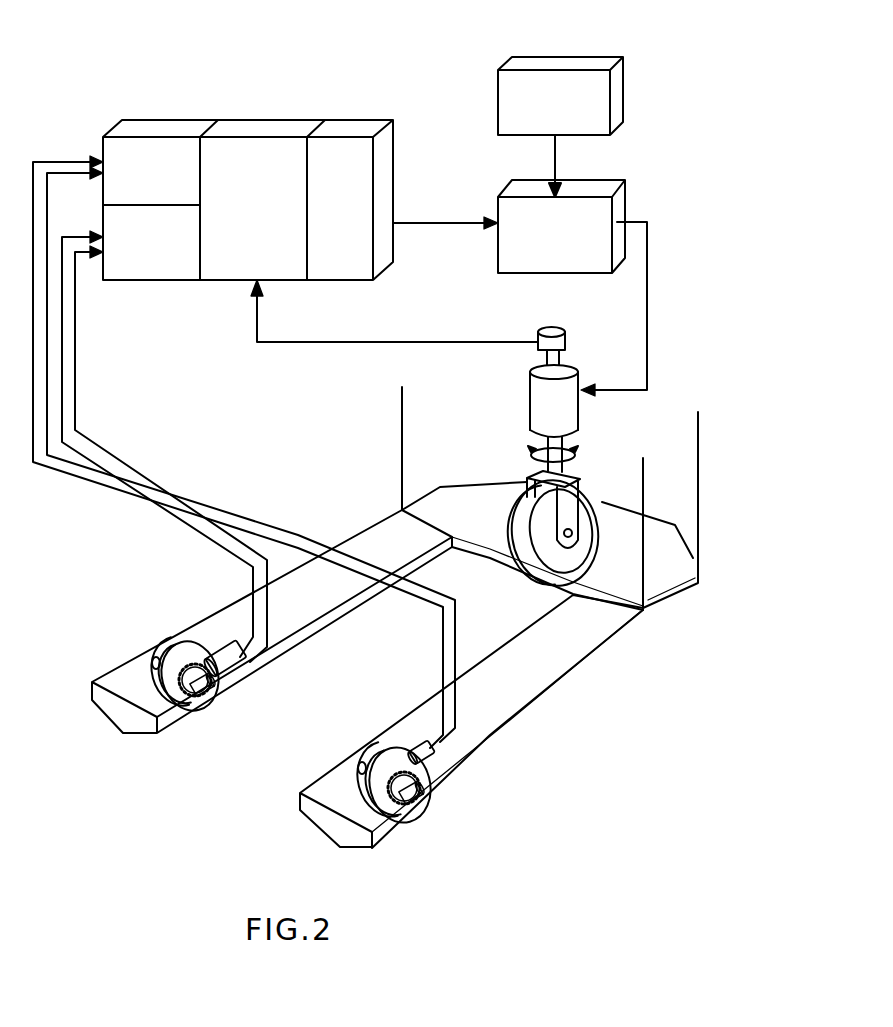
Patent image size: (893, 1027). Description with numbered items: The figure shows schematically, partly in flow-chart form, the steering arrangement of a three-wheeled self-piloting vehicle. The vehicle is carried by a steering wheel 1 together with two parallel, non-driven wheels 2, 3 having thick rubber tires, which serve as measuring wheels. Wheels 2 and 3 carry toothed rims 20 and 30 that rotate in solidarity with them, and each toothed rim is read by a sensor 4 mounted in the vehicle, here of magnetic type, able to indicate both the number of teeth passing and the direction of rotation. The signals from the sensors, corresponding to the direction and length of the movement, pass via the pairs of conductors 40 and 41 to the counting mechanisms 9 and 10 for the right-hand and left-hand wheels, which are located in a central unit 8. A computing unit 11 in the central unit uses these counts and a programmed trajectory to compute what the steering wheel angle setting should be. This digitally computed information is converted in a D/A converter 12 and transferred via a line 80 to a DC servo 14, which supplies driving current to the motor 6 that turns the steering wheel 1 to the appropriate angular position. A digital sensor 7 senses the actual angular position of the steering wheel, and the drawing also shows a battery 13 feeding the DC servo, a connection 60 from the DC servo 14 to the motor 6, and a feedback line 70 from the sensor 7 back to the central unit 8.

The steering wheel 1 is at (594, 510).
The non-driven wheel 2 is at (168, 648).
The non-driven wheel 3 is at (374, 752).
The sensor 4 is at (222, 650).
The motor 6 is at (530, 398).
The digital sensor 7 is at (567, 340).
The central unit 8 is at (248, 187).
The counting mechanism 9 is at (160, 135).
The counting mechanism 10 is at (148, 282).
The computing unit 11 is at (234, 137).
The D/A converter 12 is at (345, 133).
The battery 13 is at (564, 56).
The DC servo 14 is at (592, 194).
The toothed rim 20 is at (198, 702).
The toothed rim 30 is at (395, 812).
The pair of conductors 40 is at (80, 482).
The pair of conductors 41 is at (170, 490).
The servo output line 60 is at (648, 322).
The feedback line 70 is at (374, 341).
The line 80 is at (438, 221).